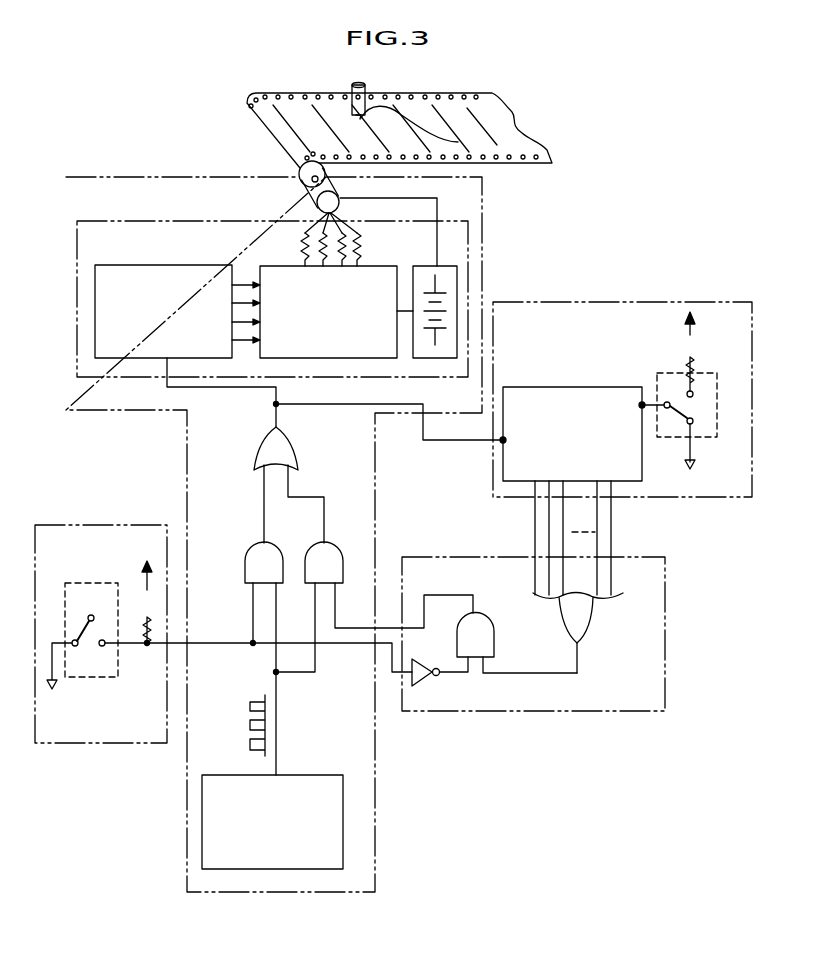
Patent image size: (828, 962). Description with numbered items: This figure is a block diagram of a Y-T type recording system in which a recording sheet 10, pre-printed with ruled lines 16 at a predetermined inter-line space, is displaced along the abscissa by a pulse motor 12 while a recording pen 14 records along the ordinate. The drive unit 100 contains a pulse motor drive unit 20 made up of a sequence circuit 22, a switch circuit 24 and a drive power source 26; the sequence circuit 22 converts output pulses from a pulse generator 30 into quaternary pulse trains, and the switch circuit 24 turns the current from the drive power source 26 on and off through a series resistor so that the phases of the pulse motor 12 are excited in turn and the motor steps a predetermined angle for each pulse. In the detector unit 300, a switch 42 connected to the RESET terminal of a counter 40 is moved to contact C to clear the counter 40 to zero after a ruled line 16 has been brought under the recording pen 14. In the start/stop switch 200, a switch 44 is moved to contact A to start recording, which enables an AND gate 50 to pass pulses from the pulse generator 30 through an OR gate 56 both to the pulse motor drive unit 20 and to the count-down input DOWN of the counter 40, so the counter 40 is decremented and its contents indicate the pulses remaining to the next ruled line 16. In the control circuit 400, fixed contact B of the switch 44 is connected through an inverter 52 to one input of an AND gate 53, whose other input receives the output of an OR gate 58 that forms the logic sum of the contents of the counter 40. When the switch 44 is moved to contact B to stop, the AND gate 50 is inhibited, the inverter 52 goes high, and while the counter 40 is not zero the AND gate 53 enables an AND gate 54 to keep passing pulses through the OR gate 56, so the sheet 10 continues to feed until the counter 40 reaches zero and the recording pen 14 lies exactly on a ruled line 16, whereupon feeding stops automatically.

The recording sheet 10 is at (540, 150).
The pulse motor 12 is at (313, 196).
The recording pen 14 is at (365, 86).
The ruled lines 16 is at (480, 123).
The pulse motor drive unit 20 is at (120, 220).
The sequence circuit 22 is at (155, 265).
The switch circuit 24 is at (287, 265).
The drive power source 26 is at (432, 265).
The pulse generator 30 is at (318, 775).
The counter 40 is at (568, 387).
The switch 42 is at (668, 373).
The switch 44 is at (105, 583).
The AND gate 50 is at (250, 546).
The inverter 52 is at (434, 678).
The AND gate 53 is at (494, 635).
The AND gate 54 is at (338, 547).
The OR gate 56 is at (303, 441).
The OR gate 58 is at (593, 612).
The drive unit 100 is at (187, 467).
The start/stop switch 200 is at (122, 525).
The detector unit 300 is at (608, 302).
The control circuit 400 is at (596, 711).